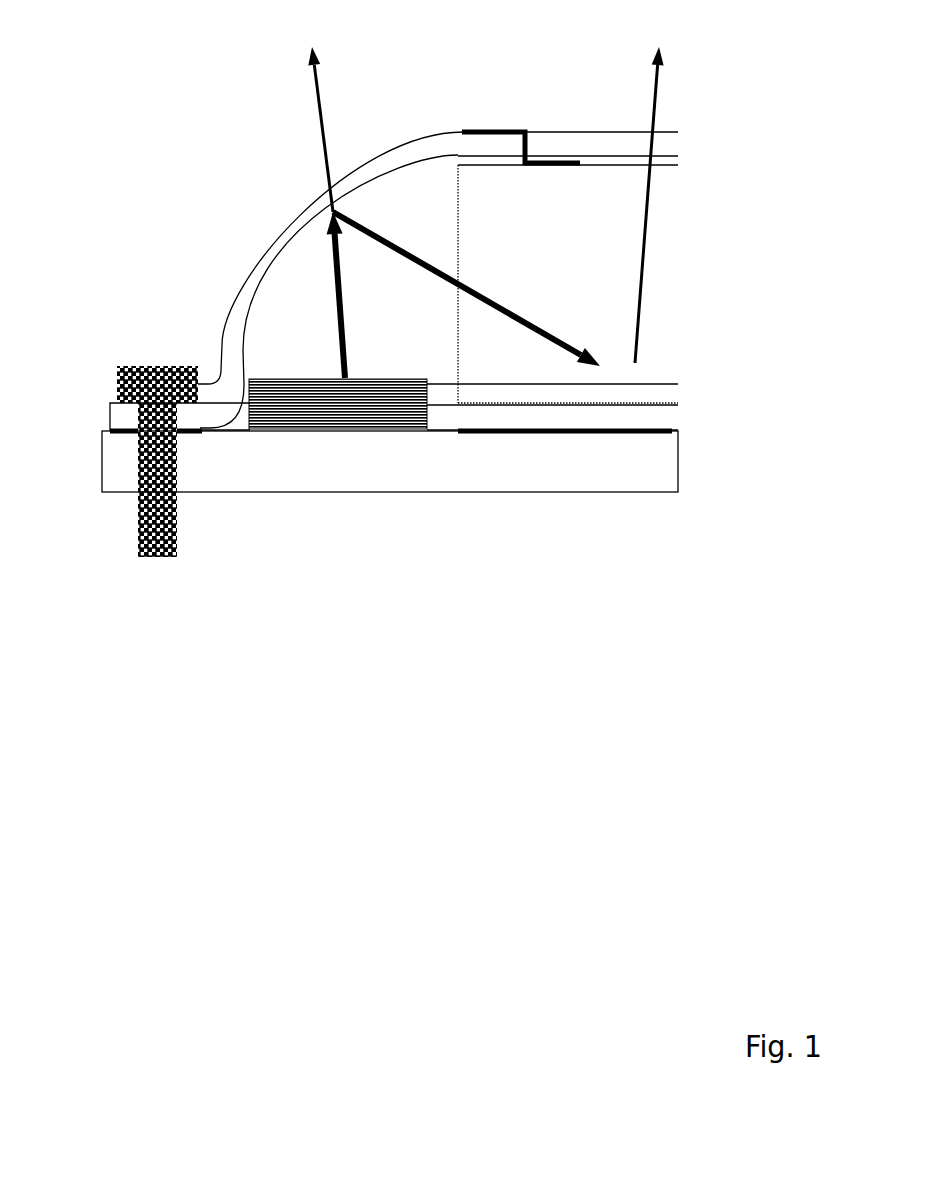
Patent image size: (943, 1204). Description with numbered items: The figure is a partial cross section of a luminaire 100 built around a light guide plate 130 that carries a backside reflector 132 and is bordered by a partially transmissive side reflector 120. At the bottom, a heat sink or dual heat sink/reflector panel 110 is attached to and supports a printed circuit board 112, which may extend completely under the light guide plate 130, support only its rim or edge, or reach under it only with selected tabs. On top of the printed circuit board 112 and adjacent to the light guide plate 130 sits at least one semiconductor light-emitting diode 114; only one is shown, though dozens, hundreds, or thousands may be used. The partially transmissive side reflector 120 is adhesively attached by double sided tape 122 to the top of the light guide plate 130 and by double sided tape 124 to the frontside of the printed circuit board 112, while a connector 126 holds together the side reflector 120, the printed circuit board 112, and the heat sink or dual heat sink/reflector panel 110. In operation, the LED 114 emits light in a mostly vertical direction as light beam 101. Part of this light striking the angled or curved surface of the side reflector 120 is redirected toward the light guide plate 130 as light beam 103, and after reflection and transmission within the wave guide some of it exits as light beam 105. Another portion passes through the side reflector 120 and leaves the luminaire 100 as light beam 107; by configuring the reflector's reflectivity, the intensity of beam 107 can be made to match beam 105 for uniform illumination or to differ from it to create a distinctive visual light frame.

The luminaire 100 is at (219, 75).
The light beam 101 is at (350, 338).
The light beam 103 is at (427, 276).
The light beam 105 is at (652, 91).
The light beam 107 is at (321, 92).
The heat sink or dual heat sink/reflector panel 110 is at (480, 559).
The printed circuit board 112 is at (480, 473).
The semiconductor light-emitting diode (LED) 114 is at (299, 360).
The partially transmissive side reflector 120 is at (223, 305).
The double sided tape 122 is at (493, 128).
The double sided tape 124 is at (110, 428).
The connector 126 is at (117, 376).
The light guide plate 130 is at (592, 275).
The backside reflector 132 is at (683, 412).